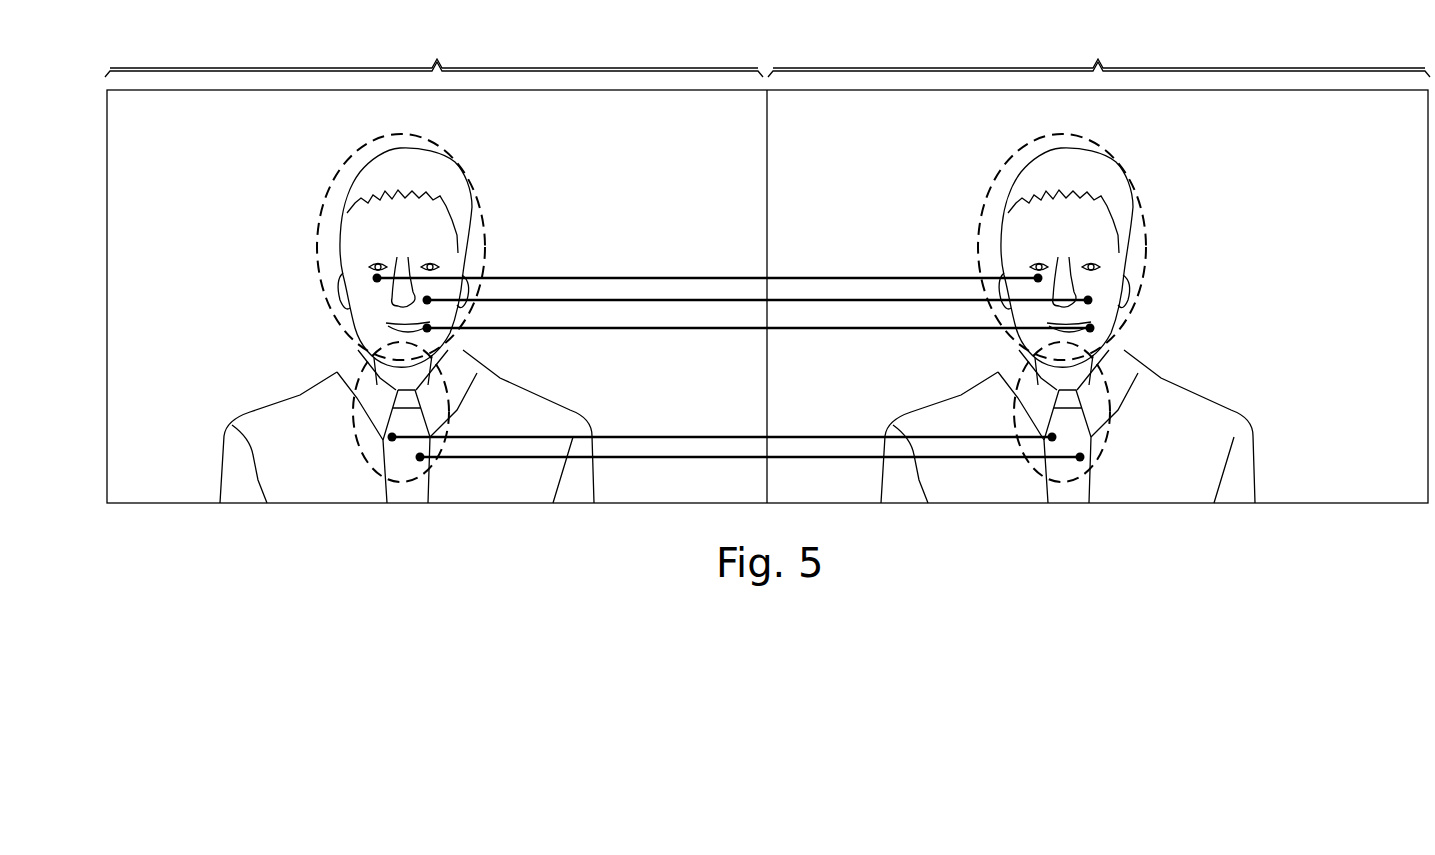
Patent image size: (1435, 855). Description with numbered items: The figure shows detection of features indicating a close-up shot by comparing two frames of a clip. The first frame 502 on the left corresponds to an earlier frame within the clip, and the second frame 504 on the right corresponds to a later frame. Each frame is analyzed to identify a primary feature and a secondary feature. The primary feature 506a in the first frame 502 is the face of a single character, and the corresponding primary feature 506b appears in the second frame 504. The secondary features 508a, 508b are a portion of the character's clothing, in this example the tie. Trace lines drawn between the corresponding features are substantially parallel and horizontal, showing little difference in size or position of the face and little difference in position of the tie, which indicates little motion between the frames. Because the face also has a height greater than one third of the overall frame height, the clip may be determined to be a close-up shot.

The first frame 502 is at (434, 53).
The second frame 504 is at (1099, 53).
The primary feature 506a is at (318, 214).
The primary feature 506b is at (1140, 190).
The secondary feature 508a is at (352, 450).
The secondary feature 508b is at (1110, 448).